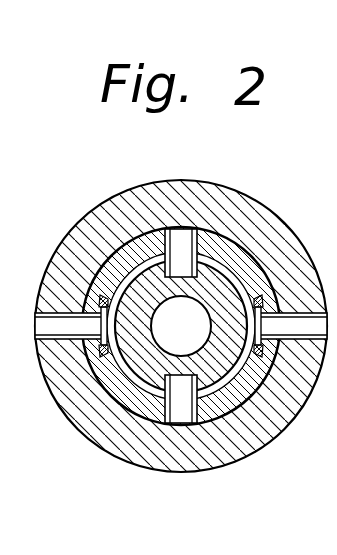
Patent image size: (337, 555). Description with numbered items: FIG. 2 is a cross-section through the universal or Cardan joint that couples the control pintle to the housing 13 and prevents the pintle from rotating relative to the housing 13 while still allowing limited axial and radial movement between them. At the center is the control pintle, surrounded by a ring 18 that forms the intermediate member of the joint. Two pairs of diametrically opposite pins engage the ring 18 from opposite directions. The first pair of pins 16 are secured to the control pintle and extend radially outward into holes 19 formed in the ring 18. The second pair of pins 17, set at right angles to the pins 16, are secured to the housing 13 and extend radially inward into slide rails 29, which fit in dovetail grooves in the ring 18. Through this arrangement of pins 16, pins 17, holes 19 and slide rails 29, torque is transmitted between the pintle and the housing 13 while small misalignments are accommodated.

The housing 13 is at (238, 445).
The pins 16 is at (184, 252).
The pins 17 is at (296, 325).
The ring 18 is at (243, 385).
The holes 19 is at (203, 242).
The slide rails 29 is at (102, 296).